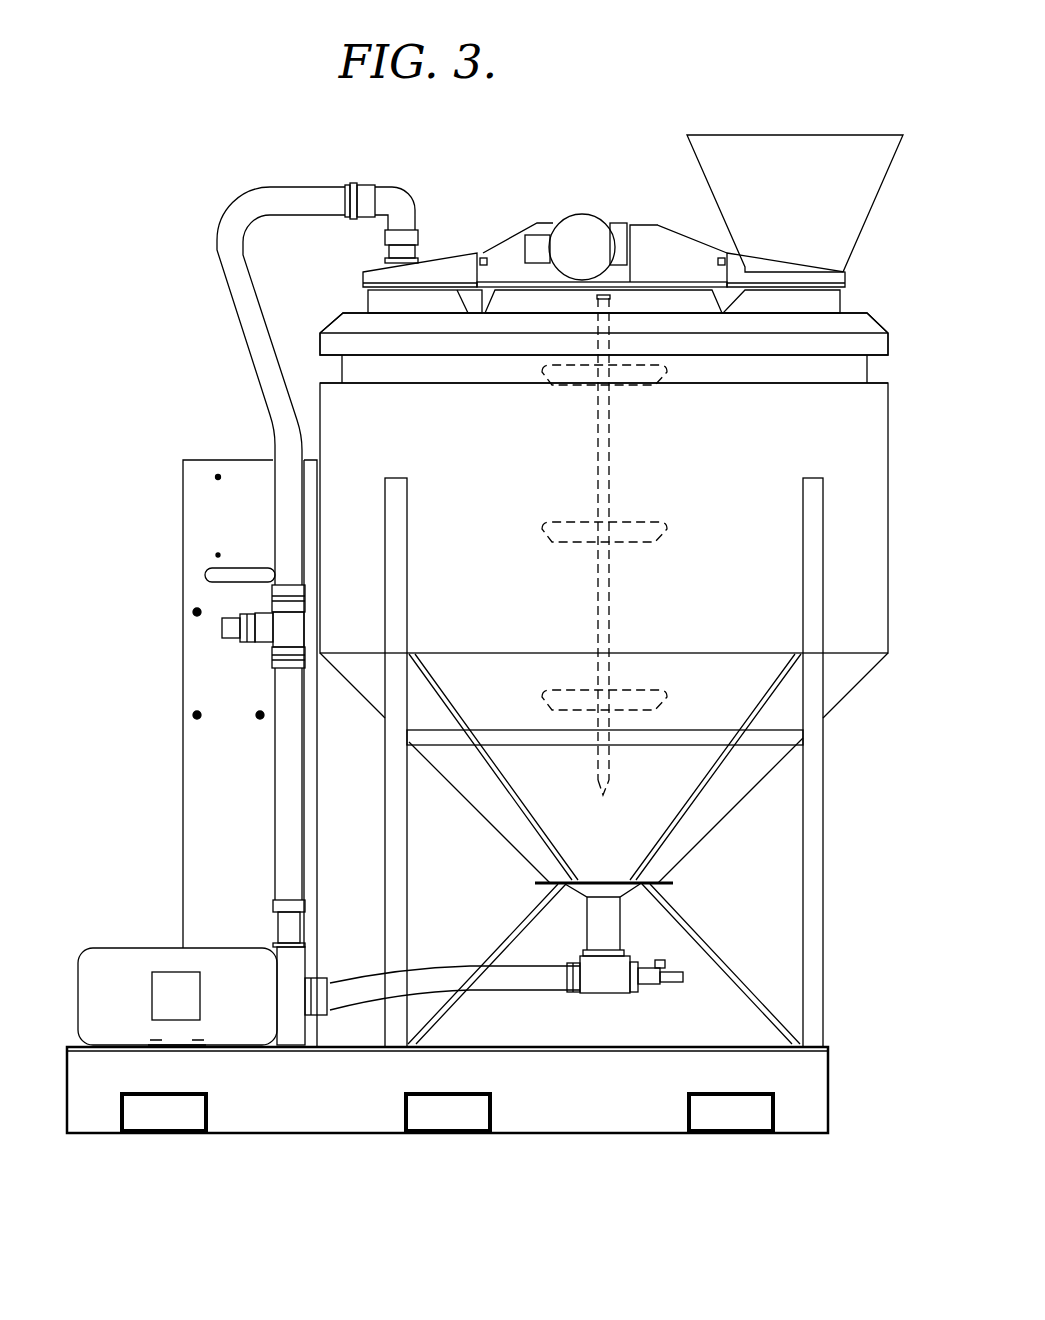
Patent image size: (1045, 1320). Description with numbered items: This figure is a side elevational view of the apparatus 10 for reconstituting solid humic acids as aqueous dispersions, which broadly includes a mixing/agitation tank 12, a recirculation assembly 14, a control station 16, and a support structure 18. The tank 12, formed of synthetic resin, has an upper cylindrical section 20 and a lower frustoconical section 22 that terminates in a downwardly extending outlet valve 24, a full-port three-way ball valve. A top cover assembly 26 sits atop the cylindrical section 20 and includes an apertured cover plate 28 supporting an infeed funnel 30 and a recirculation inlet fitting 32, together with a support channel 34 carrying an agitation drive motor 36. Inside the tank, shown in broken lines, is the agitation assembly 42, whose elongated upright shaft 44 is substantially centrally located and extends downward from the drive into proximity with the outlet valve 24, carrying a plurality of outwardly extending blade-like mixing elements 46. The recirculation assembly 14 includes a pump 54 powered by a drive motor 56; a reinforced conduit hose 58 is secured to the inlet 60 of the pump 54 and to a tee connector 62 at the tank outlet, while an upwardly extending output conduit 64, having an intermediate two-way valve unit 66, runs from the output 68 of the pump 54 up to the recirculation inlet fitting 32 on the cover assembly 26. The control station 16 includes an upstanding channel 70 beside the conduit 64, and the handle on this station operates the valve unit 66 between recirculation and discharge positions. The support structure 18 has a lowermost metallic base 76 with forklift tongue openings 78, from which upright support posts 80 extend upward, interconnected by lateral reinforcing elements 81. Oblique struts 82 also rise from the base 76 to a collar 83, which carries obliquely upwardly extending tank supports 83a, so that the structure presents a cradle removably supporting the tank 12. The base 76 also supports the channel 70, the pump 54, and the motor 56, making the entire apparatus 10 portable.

The apparatus 10 is at (298, 114).
The mixing/agitation tank 12 is at (302, 436).
The recirculation assembly 14 is at (148, 870).
The control station 16 is at (168, 608).
The support structure 18 is at (328, 1164).
The upper cylindrical section 20 is at (332, 410).
The lower frustoconical section 22 is at (845, 677).
The outlet valve 24 is at (598, 923).
The top cover assembly 26 is at (608, 176).
The apertured cover plate 28 is at (855, 312).
The infeed funnel 30 is at (786, 152).
The recirculation inlet fitting 32 is at (396, 205).
The support channel 34 is at (489, 262).
The agitation drive motor 36 is at (567, 232).
The agitation assembly 42 is at (574, 460).
The upright shaft 44 is at (612, 410).
The blade-like mixing elements 46 is at (652, 532).
The pump 54 is at (296, 1042).
The drive motor 56 is at (130, 958).
The conduit hose 58 is at (440, 980).
The inlet 60 is at (322, 985).
The tee connector 62 is at (604, 990).
The output conduit 64 is at (280, 778).
The two-way valve unit 66 is at (265, 640).
The output 68 is at (288, 933).
The upstanding channel 70 is at (188, 535).
The base 76 is at (815, 1085).
The forklift tongue openings 78 is at (440, 1135).
The upright support posts 80 is at (390, 780).
The lateral reinforcing elements 81 is at (512, 736).
The oblique struts 82 is at (700, 945).
The collar 83 is at (593, 884).
The tank supports 83a is at (511, 820).